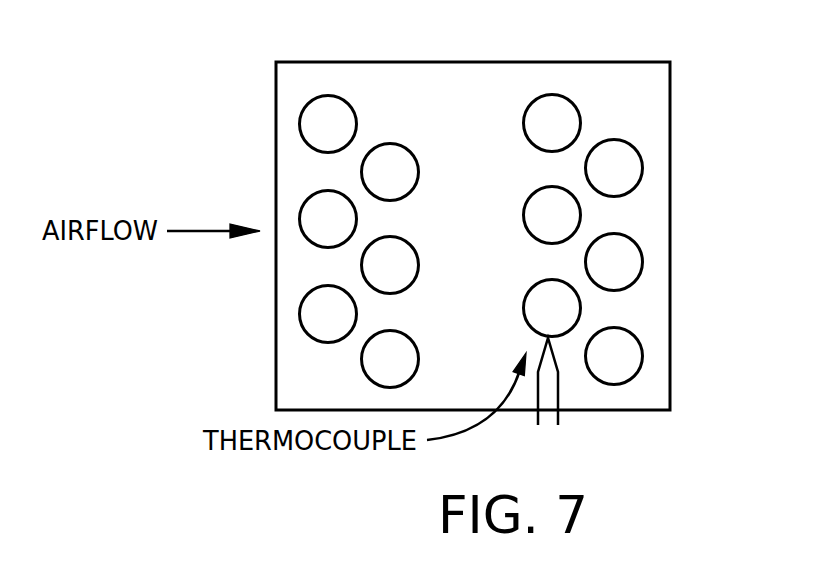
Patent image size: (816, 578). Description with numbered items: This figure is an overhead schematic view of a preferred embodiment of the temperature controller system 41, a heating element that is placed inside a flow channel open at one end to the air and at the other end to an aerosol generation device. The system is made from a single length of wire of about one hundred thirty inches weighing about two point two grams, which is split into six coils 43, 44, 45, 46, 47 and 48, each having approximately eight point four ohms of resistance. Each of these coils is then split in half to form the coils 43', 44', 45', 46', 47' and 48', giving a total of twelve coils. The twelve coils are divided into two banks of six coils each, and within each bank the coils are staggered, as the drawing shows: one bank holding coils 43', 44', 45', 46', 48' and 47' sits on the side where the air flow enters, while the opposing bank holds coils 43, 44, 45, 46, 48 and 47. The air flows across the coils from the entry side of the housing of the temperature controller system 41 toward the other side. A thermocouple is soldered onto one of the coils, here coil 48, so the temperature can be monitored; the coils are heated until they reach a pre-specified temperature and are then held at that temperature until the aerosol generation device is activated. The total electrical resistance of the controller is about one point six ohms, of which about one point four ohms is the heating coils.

The temperature controller system 41 is at (670, 90).
The coil 43 is at (624, 123).
The coil 44 is at (662, 168).
The coil 45 is at (624, 215).
The coil 46 is at (662, 262).
The coil 47 is at (662, 356).
The coil 48 is at (622, 308).
The coil 43' is at (277, 124).
The coil 44' is at (317, 172).
The coil 45' is at (276, 217).
The coil 46' is at (316, 265).
The coil 47' is at (315, 359).
The coil 48' is at (276, 314).